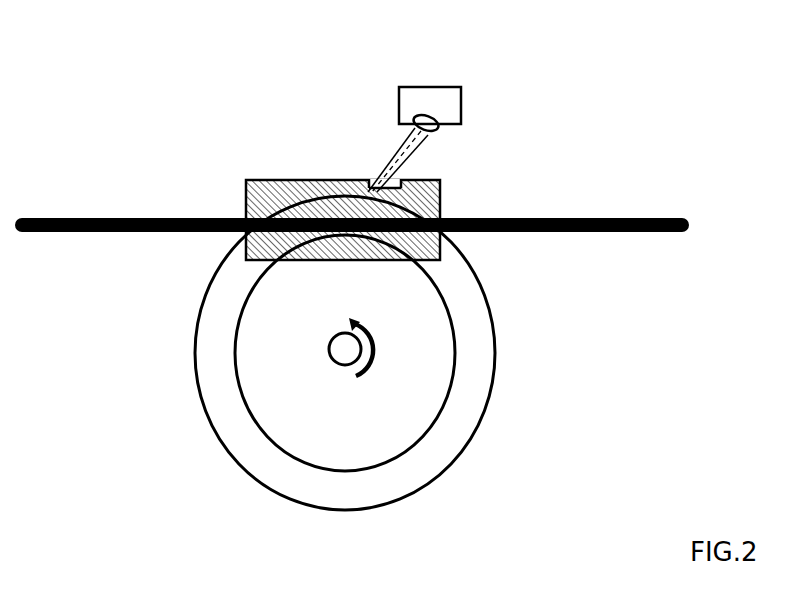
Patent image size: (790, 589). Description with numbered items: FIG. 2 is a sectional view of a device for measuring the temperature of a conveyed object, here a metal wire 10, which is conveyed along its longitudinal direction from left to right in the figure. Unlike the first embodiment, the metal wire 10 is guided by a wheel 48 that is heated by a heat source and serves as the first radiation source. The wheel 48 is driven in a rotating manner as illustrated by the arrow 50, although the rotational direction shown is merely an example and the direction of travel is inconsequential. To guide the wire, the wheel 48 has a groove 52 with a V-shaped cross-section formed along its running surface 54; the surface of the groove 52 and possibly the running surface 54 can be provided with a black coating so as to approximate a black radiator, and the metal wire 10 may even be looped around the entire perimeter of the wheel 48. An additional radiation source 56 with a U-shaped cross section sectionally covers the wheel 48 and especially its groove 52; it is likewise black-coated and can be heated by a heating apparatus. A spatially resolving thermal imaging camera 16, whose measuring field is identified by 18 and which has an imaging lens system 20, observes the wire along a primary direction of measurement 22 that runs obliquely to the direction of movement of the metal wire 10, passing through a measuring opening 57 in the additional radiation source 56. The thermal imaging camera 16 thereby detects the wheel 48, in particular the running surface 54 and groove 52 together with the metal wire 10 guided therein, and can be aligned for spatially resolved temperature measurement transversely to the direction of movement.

The metal wire 10 is at (585, 217).
The thermal imaging camera 16 is at (448, 98).
The measuring field 18 is at (415, 150).
The imaging lens system 20 is at (422, 118).
The primary direction of measurement 22 is at (398, 152).
The wheel 48 is at (298, 433).
The arrow 50 is at (380, 343).
The groove 52 is at (215, 320).
The running surface 54 is at (198, 387).
The additional radiation source 56 is at (268, 180).
The measuring opening 57 is at (393, 186).